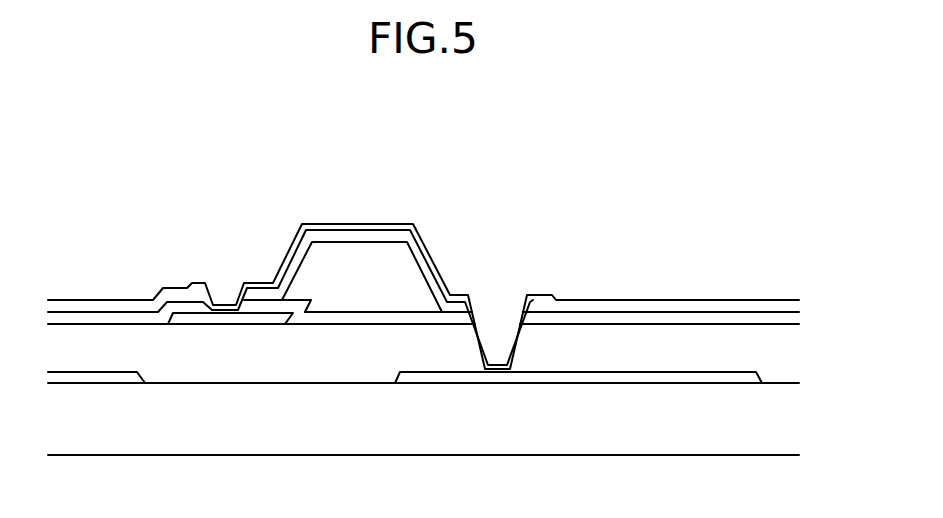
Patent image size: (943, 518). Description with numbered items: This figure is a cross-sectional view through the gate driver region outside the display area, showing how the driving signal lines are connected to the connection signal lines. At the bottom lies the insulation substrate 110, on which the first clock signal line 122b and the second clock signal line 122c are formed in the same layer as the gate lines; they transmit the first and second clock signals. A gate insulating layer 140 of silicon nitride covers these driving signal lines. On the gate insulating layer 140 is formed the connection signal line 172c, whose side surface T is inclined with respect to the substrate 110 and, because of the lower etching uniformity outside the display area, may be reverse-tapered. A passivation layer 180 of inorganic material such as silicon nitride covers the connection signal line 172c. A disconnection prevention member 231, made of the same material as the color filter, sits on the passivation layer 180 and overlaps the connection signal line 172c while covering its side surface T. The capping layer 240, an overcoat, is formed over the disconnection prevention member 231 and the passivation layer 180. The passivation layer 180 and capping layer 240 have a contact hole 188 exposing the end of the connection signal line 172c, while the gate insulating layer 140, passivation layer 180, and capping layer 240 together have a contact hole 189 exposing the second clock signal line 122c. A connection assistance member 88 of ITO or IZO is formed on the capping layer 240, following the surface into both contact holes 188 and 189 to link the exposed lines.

The connection assistance member 88 is at (385, 227).
The insulation substrate 110 is at (207, 428).
The first clock signal line 122b is at (90, 377).
The second clock signal line 122c is at (565, 377).
The gate insulating layer 140 is at (348, 362).
The connection signal line 172c is at (230, 318).
The passivation layer 180 is at (674, 318).
The contact hole 188 is at (213, 297).
The contact hole 189 is at (477, 335).
The disconnection prevention member 231 is at (342, 258).
The capping layer 240 is at (613, 307).
The side surface T is at (288, 323).